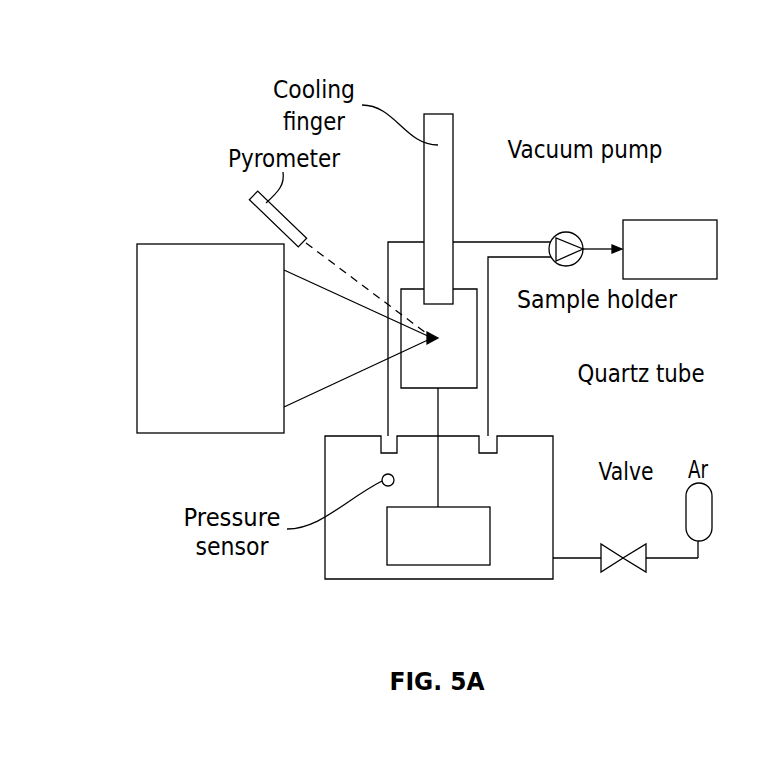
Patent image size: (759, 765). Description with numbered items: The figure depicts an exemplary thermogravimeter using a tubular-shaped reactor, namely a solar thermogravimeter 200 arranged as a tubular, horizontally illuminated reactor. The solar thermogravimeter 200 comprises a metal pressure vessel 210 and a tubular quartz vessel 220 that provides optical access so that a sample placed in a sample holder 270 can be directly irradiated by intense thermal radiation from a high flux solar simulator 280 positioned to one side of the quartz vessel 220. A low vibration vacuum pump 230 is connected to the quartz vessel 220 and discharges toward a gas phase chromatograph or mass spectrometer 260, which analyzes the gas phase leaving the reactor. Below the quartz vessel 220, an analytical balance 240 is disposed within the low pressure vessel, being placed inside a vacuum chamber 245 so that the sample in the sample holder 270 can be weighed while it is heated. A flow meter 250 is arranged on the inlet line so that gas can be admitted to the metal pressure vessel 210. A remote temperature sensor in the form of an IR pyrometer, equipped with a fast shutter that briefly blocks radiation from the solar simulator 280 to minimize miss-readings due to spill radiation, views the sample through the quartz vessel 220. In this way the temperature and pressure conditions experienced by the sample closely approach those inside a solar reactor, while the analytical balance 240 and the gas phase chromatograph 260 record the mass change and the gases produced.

The solar thermogravimeter 200 is at (584, 56).
The metal pressure vessel 210 is at (553, 572).
The quartz vessel 220 is at (488, 365).
The vacuum pump 230 is at (565, 232).
The analytical balance 240 is at (455, 506).
The vacuum chamber 245 is at (390, 580).
The flow meter 250 is at (605, 545).
The gas phase chromatograph 260 is at (655, 220).
The sample holder 270 is at (477, 316).
The high flux solar simulator 280 is at (200, 244).